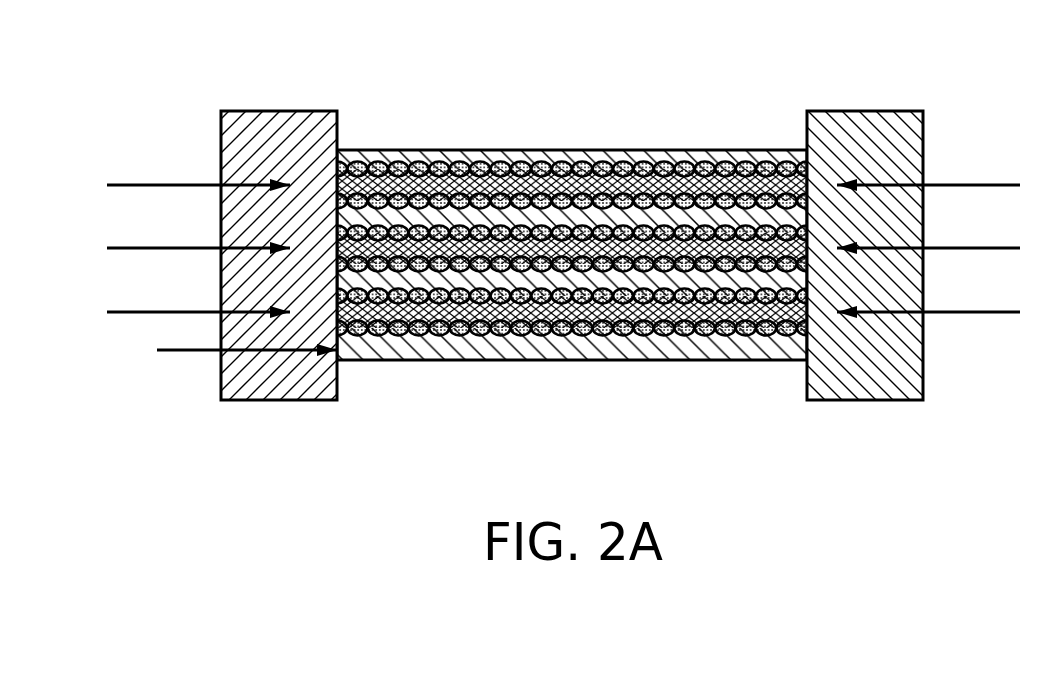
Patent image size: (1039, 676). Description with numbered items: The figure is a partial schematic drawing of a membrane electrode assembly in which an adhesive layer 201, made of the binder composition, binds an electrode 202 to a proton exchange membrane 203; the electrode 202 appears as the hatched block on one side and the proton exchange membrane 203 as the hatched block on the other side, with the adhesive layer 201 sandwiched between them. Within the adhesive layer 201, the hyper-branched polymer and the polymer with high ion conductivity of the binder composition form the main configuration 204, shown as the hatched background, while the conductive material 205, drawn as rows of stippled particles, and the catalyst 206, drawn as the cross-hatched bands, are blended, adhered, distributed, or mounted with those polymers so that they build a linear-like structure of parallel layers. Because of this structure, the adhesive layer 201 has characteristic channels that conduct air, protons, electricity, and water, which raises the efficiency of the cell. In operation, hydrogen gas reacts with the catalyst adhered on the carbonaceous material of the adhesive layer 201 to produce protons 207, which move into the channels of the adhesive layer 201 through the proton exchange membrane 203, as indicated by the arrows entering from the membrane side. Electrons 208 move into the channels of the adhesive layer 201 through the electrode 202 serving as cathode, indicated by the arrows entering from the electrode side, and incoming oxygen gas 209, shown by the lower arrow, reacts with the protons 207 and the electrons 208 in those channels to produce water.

The adhesive layer 201 is at (573, 150).
The electrode 202 is at (277, 111).
The proton exchange membrane 203 is at (863, 111).
The main configuration 204 is at (422, 352).
The conductive material 205 is at (488, 326).
The catalyst 206 is at (552, 312).
The protons 207 is at (928, 233).
The electrons 208 is at (198, 233).
The incoming oxygen gas 209 is at (247, 335).